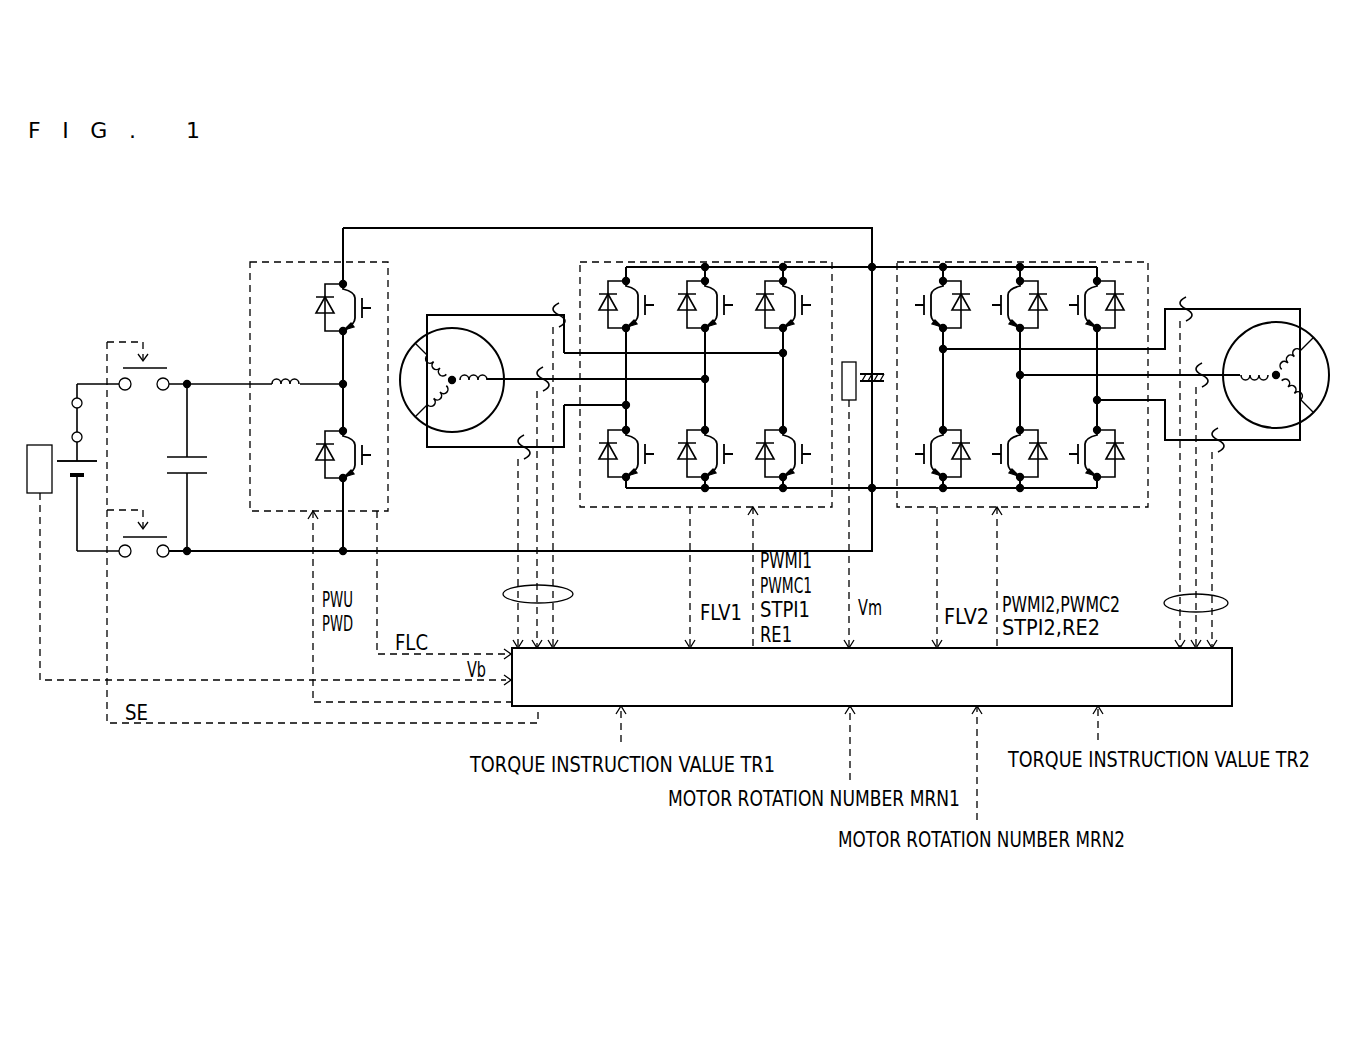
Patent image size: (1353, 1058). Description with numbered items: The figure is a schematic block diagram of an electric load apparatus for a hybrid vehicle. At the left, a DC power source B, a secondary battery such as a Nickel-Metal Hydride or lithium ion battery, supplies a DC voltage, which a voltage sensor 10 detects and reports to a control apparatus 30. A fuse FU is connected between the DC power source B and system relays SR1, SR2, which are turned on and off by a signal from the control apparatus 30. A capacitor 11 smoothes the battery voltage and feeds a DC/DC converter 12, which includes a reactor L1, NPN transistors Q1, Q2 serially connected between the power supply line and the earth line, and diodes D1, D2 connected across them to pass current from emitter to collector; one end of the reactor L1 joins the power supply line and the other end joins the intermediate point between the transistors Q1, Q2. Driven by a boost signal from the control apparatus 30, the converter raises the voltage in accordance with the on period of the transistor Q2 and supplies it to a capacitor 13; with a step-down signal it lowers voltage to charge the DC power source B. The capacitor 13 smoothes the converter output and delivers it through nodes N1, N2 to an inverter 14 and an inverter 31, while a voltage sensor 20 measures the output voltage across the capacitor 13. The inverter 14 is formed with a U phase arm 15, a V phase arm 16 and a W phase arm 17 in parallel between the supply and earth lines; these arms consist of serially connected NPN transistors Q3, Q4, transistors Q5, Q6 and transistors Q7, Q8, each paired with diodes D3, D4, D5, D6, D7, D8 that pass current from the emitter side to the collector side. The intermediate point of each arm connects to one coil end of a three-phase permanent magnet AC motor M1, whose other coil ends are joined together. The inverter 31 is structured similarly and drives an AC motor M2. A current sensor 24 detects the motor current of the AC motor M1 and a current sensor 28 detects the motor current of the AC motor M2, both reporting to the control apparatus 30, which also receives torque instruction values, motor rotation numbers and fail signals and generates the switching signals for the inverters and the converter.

The voltage sensor 10 is at (40, 445).
The capacitor 11 is at (168, 457).
The DC/DC converter 12 is at (319, 361).
The capacitor 13 is at (879, 372).
The inverter 14 is at (726, 348).
The U phase arm 15 is at (660, 414).
The V phase arm 16 is at (740, 390).
The W phase arm 17 is at (818, 362).
The voltage sensor 20 is at (849, 362).
The current sensor 24 is at (554, 310).
The current sensor 28 is at (1180, 307).
The control apparatus 30 is at (1232, 665).
The inverter 31 is at (1040, 262).
The DC power source B is at (70, 482).
The fuse FU is at (72, 413).
The system relay SR1 is at (157, 368).
The system relay SR2 is at (148, 537).
The reactor L1 is at (285, 370).
The NPN transistor Q1 is at (359, 305).
The NPN transistor Q2 is at (359, 453).
The NPN transistor Q3 is at (644, 302).
The NPN transistor Q4 is at (644, 451).
The NPN transistor Q5 is at (722, 302).
The NPN transistor Q6 is at (722, 451).
The NPN transistor Q7 is at (800, 302).
The NPN transistor Q8 is at (800, 451).
The diode D1 is at (321, 303).
The diode D2 is at (321, 451).
The diode D3 is at (605, 311).
The diode D4 is at (605, 460).
The diode D5 is at (683, 311).
The diode D6 is at (683, 460).
The diode D7 is at (761, 310).
The diode D8 is at (761, 460).
The AC motor M1 is at (432, 338).
The AC motor M2 is at (1302, 340).
The node N1 is at (870, 267).
The node N2 is at (875, 492).